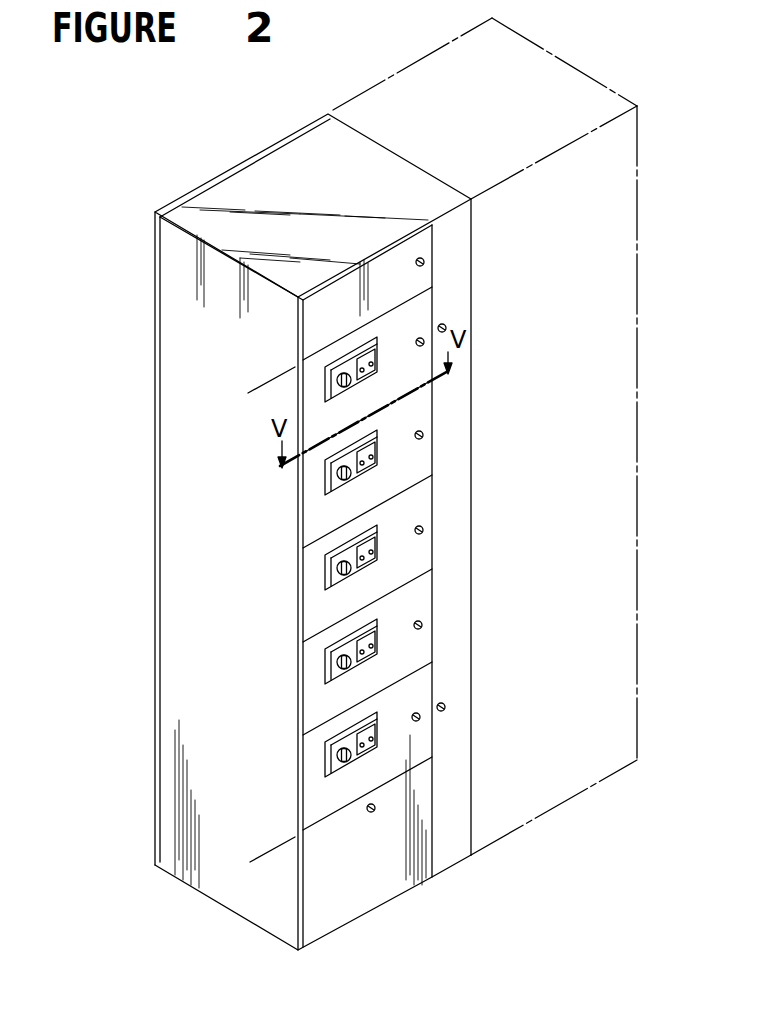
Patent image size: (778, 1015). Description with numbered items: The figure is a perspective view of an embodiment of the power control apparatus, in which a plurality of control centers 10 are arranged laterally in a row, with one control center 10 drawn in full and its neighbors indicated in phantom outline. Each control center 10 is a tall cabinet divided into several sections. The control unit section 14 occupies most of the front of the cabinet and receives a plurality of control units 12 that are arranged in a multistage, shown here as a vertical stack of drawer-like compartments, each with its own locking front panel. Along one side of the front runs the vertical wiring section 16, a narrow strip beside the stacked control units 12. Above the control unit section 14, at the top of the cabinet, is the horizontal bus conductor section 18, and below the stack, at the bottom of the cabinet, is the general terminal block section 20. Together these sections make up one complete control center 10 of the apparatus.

The control center 10 is at (408, 951).
The control unit 12 is at (412, 509).
The control unit section 14 is at (265, 846).
The vertical wiring section 16 is at (466, 548).
The horizontal bus conductor section 18 is at (404, 300).
The general terminal block section 20 is at (366, 844).